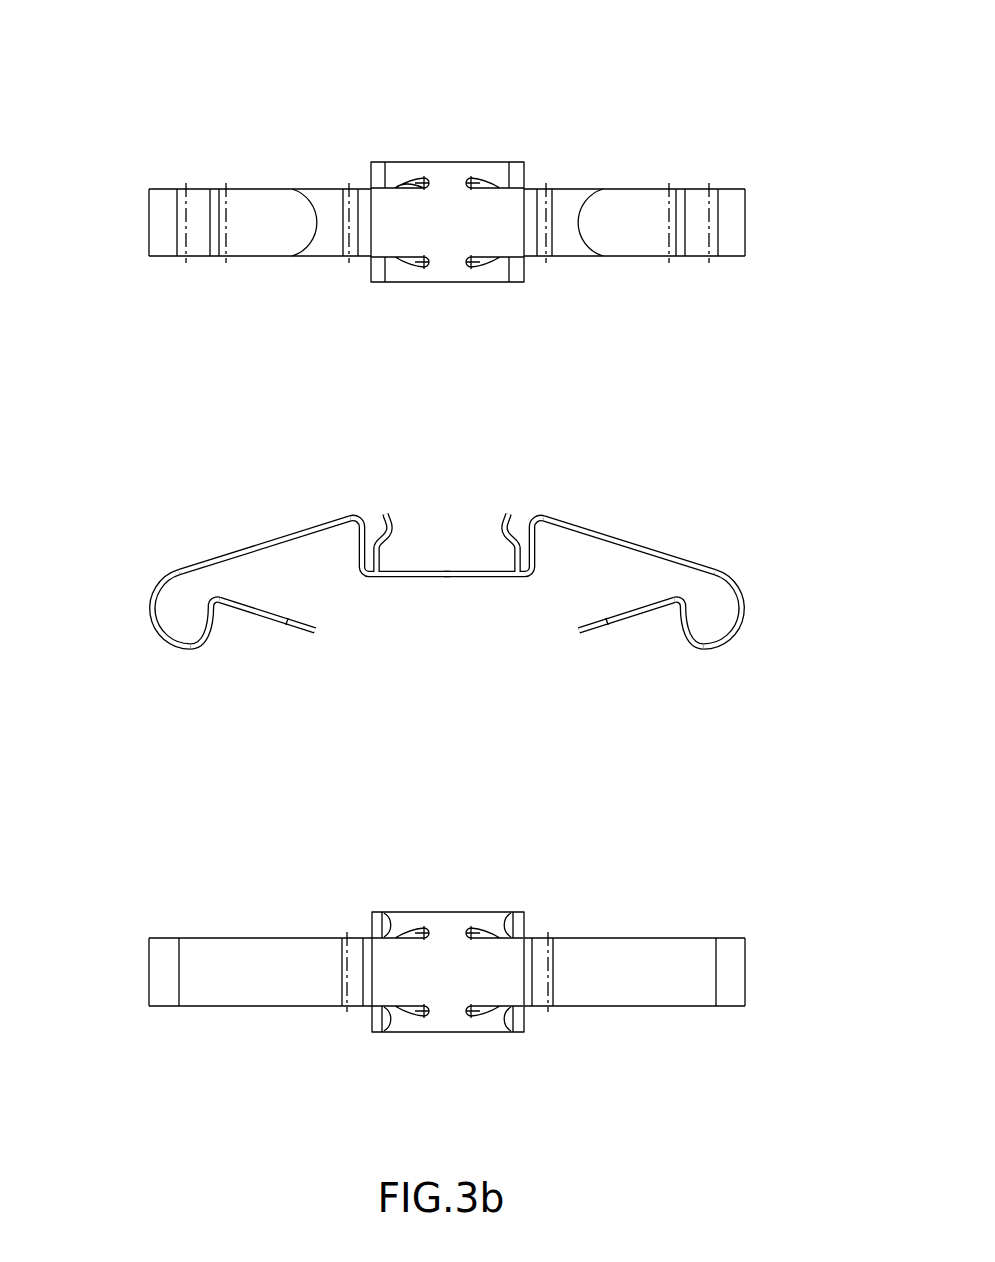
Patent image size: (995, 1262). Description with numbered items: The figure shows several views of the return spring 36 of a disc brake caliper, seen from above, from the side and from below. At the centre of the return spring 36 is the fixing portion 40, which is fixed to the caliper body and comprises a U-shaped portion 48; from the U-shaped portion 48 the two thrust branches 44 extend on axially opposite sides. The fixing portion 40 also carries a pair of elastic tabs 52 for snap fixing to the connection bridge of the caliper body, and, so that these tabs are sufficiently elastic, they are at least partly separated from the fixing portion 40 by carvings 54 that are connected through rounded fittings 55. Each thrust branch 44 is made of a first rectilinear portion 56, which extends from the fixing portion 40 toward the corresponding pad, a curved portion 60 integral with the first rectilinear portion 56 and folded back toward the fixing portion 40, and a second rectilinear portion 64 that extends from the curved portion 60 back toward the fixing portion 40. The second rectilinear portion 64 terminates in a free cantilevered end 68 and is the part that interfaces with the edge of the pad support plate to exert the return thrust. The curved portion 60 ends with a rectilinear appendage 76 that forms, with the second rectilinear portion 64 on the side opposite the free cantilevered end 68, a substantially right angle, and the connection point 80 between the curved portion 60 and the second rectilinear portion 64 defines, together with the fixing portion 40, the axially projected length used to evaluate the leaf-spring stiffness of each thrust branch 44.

The return spring 36 is at (433, 582).
The fixing portion 40 is at (457, 590).
The U-shaped portion 48 is at (430, 578).
The thrust branch 44 is at (433, 600).
The elastic tabs 52 is at (392, 1032).
The carvings 54 is at (497, 258).
The rounded fittings 55 is at (470, 182).
The first rectilinear portion 56 is at (261, 544).
The curved portion 60 is at (153, 629).
The second rectilinear portion 64 is at (272, 622).
The free cantilevered end 68 is at (316, 633).
The rectilinear appendage 76 is at (217, 628).
The connection point 80 is at (220, 596).